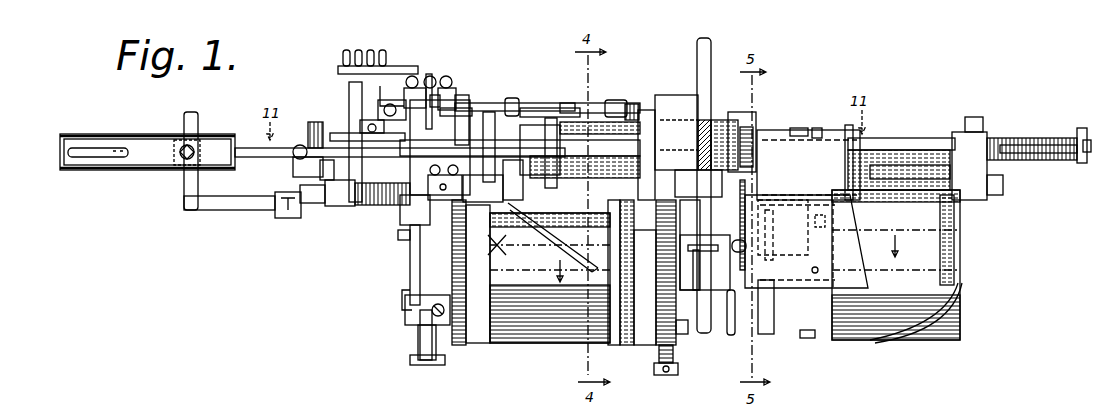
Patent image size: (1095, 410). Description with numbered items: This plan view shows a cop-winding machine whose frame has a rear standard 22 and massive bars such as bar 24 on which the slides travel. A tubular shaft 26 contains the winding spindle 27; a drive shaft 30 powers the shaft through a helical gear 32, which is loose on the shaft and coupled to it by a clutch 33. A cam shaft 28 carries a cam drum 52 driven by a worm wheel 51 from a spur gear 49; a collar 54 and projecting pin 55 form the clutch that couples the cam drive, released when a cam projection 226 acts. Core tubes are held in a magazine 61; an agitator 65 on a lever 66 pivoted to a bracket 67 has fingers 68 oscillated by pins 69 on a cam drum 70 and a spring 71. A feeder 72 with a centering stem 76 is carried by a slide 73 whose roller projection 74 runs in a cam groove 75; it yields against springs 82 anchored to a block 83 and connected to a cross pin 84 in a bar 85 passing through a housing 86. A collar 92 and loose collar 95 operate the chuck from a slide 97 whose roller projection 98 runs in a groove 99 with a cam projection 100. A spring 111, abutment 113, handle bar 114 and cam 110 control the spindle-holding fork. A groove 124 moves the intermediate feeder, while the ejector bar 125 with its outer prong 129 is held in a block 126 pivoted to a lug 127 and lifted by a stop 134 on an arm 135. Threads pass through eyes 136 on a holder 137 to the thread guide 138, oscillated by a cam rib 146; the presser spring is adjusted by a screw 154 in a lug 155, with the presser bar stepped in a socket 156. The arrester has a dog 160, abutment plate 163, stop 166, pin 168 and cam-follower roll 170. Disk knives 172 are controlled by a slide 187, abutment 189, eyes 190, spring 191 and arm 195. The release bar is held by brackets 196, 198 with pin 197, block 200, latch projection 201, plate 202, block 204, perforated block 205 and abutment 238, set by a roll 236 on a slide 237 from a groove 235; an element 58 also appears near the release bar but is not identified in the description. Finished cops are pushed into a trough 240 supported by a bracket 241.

The trough 240 is at (124, 134).
The adjustable bracket 241 is at (213, 211).
The mandrel or spindle 27 is at (245, 147).
The forward or outer prong 129 is at (304, 144).
The ejector bar 125 is at (315, 160).
The circular disk knives 172 is at (296, 176).
The cam rib 146 is at (349, 86).
The adjustable stationary holder 137 is at (340, 66).
The eyes 136 is at (358, 52).
The oscillative thread guide 138 is at (345, 132).
The socket 156 is at (392, 102).
The lug 155 is at (414, 75).
The perforated block 205 is at (432, 74).
The forked bracket 198 is at (450, 82).
The latch projection 201 is at (440, 94).
The stationary blade or plate 202 is at (462, 108).
The collar 92 is at (466, 96).
The loose collar 95 is at (492, 112).
The collar 58 is at (516, 98).
The block 204 is at (520, 104).
The block 126 is at (540, 108).
The pin 168 is at (412, 262).
The roller projection 98 is at (472, 204).
The slide 97 is at (508, 204).
The tubular shaft 26 is at (560, 140).
The arm 135 is at (600, 125).
The lug 127 is at (580, 151).
The stop 134 is at (585, 153).
The block 200 is at (614, 100).
The adjustable abutment 238 is at (632, 104).
The forked bracket 196 is at (652, 110).
The pin 197 is at (678, 95).
The drive shaft 30 is at (712, 52).
The helical gear 32 is at (700, 150).
The clutch 33 is at (724, 145).
The cam projection 226 is at (660, 180).
The projecting pin 55 is at (752, 160).
The collar 54 is at (742, 125).
The eyes 190 is at (328, 206).
The spring 191 is at (370, 206).
The abutment 189 is at (400, 230).
The slide 187 is at (408, 258).
The dog 160 is at (400, 292).
The stop 166 is at (405, 311).
The abutment plate 163 is at (418, 332).
The screw 154 is at (412, 354).
The cam-follower roll 170 is at (460, 345).
The groove 99 is at (490, 343).
The cam drum 52 is at (548, 330).
The cam projection 100 is at (494, 258).
The groove 124 is at (560, 250).
The slide 237 is at (626, 220).
The roll 236 is at (638, 272).
The groove 235 is at (640, 330).
The worm wheel 51 is at (657, 270).
The spur gear 49 is at (684, 334).
The standard 22 is at (688, 232).
The arm 195 is at (696, 255).
The spring 111 is at (738, 222).
The abutment 113 is at (748, 245).
The handle bar 114 is at (775, 213).
The cam shaft 28 is at (740, 300).
The cam 110 is at (766, 334).
The magazine 61 is at (805, 288).
The bracket 67 is at (820, 218).
The pins 69 is at (820, 322).
The agitator 65 is at (770, 128).
The fingers 68 is at (800, 128).
The spring 71 is at (830, 128).
The lever 66 is at (848, 125).
The feeder 72 is at (915, 138).
The centering stem 76 is at (899, 169).
The rod or bar 24 is at (888, 178).
The block 83 is at (958, 132).
The housing 86 is at (1015, 138).
The cross pin 84 is at (1082, 128).
The springs 82 is at (1040, 160).
The bar 85 is at (1084, 165).
The slide 73 is at (995, 195).
The cam drum 70 is at (862, 340).
The roller projection 74 is at (940, 215).
The cam groove 75 is at (932, 340).